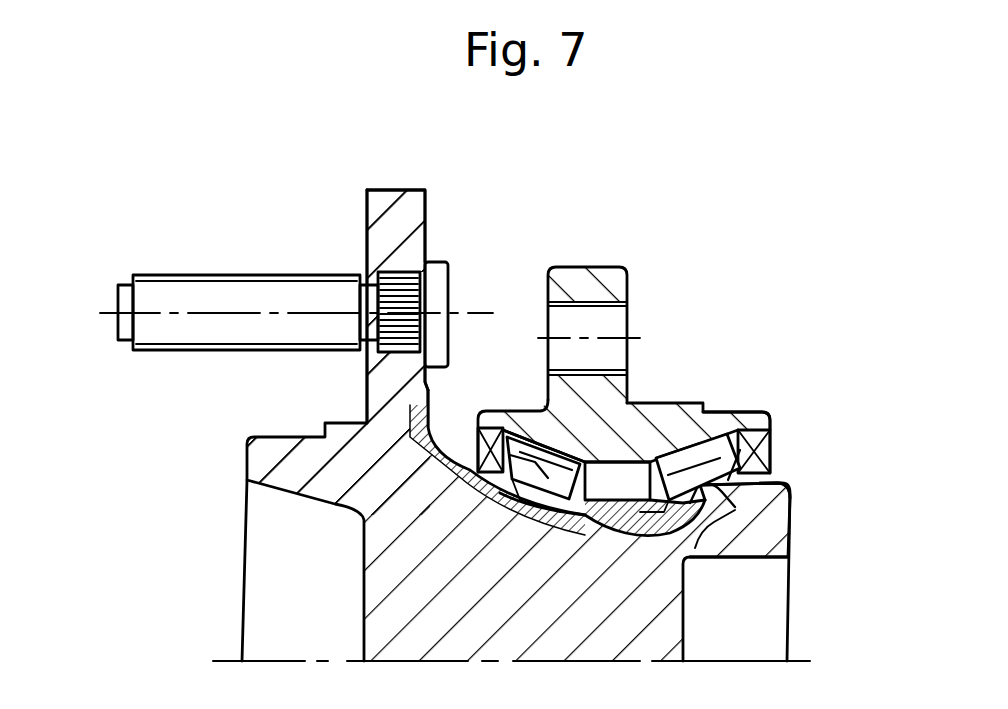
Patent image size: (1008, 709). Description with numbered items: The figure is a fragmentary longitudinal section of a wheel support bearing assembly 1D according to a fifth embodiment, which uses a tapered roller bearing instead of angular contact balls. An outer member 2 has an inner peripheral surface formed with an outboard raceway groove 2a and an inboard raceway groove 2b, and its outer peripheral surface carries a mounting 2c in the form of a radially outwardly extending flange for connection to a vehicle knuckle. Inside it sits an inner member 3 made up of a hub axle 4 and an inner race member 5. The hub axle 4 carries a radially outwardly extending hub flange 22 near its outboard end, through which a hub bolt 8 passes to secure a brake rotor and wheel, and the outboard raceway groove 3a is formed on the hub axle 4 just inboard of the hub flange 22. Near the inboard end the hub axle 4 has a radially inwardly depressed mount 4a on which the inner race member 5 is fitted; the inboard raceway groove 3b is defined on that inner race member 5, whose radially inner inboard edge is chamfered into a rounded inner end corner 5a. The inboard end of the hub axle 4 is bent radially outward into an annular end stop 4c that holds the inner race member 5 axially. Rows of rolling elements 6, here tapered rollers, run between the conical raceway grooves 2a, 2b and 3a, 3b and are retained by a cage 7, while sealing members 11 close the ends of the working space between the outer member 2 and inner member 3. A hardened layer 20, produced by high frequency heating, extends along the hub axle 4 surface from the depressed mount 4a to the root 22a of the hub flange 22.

The wheel support bearing assembly 1D is at (306, 181).
The outer member 2 is at (710, 401).
The outboard raceway groove 2a is at (590, 455).
The inboard raceway groove 2b is at (703, 407).
The mounting 2c is at (587, 270).
The inner member 3 is at (73, 533).
The outboard raceway groove 3a is at (530, 515).
The inboard raceway groove 3b is at (695, 548).
The hub axle 4 is at (357, 497).
The depressed mount 4a is at (713, 518).
The annular end stop 4c is at (797, 503).
The inner race member 5 is at (690, 510).
The rounded inner end corner 5a is at (700, 522).
The rolling elements 6 is at (742, 440).
The retainer or cage 7 is at (648, 440).
The hub bolt 8 is at (215, 293).
The sealing member 11 is at (483, 417).
The hardened layer 20 is at (560, 527).
The hub flange 22 is at (395, 213).
The root of the hub flange 22a is at (367, 410).